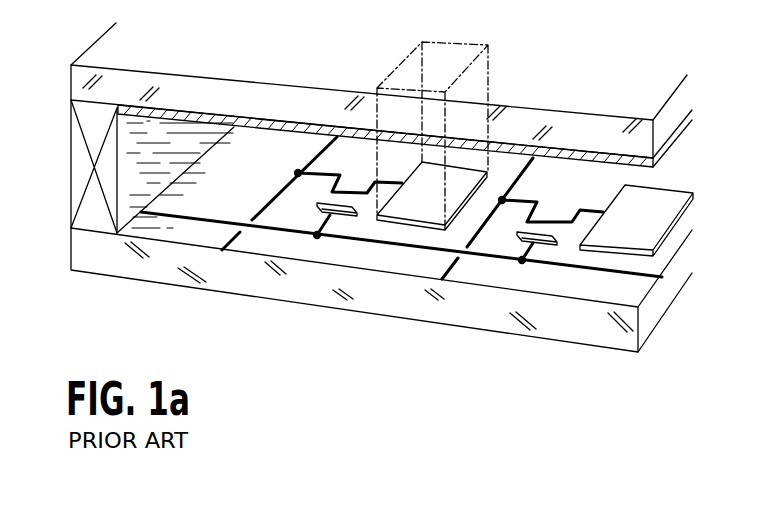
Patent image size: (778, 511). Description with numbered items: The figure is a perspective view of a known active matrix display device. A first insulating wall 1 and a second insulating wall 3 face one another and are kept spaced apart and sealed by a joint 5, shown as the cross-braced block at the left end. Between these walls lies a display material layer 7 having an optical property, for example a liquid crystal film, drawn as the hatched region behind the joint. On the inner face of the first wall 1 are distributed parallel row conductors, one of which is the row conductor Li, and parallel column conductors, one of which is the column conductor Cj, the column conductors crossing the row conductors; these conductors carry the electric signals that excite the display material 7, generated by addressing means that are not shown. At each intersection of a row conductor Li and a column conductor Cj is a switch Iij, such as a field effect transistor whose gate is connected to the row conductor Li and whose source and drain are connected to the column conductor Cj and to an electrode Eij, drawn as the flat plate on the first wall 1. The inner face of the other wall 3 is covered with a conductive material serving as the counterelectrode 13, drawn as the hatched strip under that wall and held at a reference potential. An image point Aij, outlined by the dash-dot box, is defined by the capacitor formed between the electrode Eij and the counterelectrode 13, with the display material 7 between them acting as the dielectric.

The first insulating wall 1 is at (100, 252).
The second insulating wall 3 is at (97, 79).
The joint 5 is at (95, 138).
The display material layer 7 is at (168, 147).
The counterelectrode 13 is at (303, 127).
The row conductor Li is at (200, 222).
The column conductor Cj is at (233, 240).
The electrode Eij is at (432, 223).
The switch Iij is at (340, 216).
The image point Aij is at (468, 164).